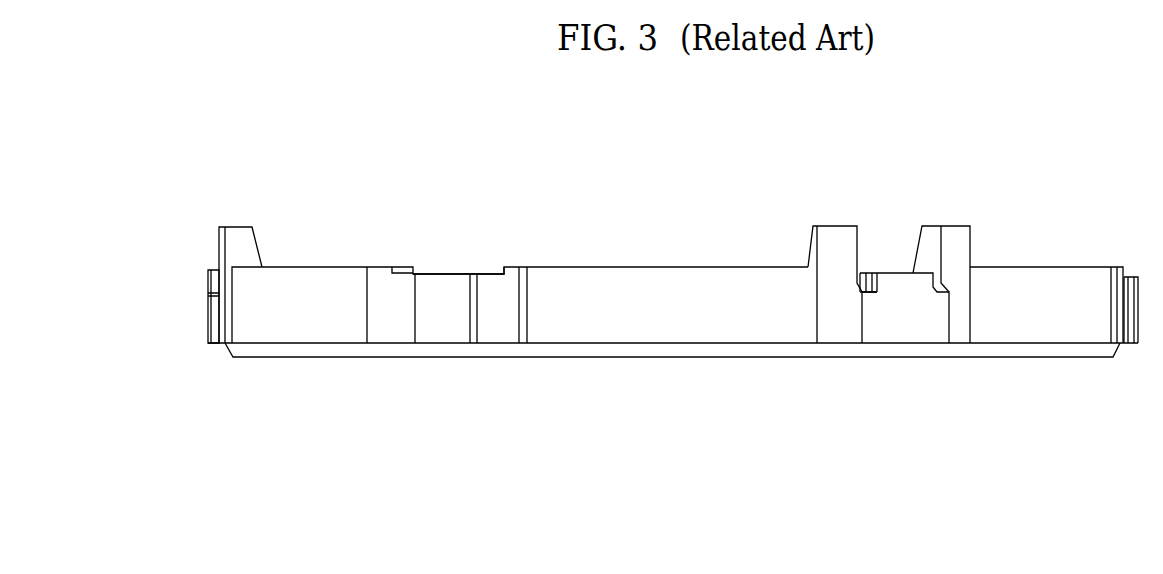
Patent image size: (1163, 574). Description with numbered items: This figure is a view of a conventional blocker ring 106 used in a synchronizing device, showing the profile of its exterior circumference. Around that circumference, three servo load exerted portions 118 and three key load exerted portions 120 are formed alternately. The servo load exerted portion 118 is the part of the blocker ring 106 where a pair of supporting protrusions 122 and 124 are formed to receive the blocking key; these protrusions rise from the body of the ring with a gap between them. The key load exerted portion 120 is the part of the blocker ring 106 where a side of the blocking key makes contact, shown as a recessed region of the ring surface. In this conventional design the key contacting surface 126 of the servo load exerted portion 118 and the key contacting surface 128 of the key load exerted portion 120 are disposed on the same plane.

The blocker ring 106 is at (673, 322).
The servo load exerted portion 118 is at (887, 209).
The key load exerted portion 120 is at (481, 254).
The supporting protrusion 122 is at (955, 250).
The supporting protrusion 124 is at (825, 242).
The key contacting surface 126 is at (891, 270).
The key contacting surface 128 is at (437, 268).